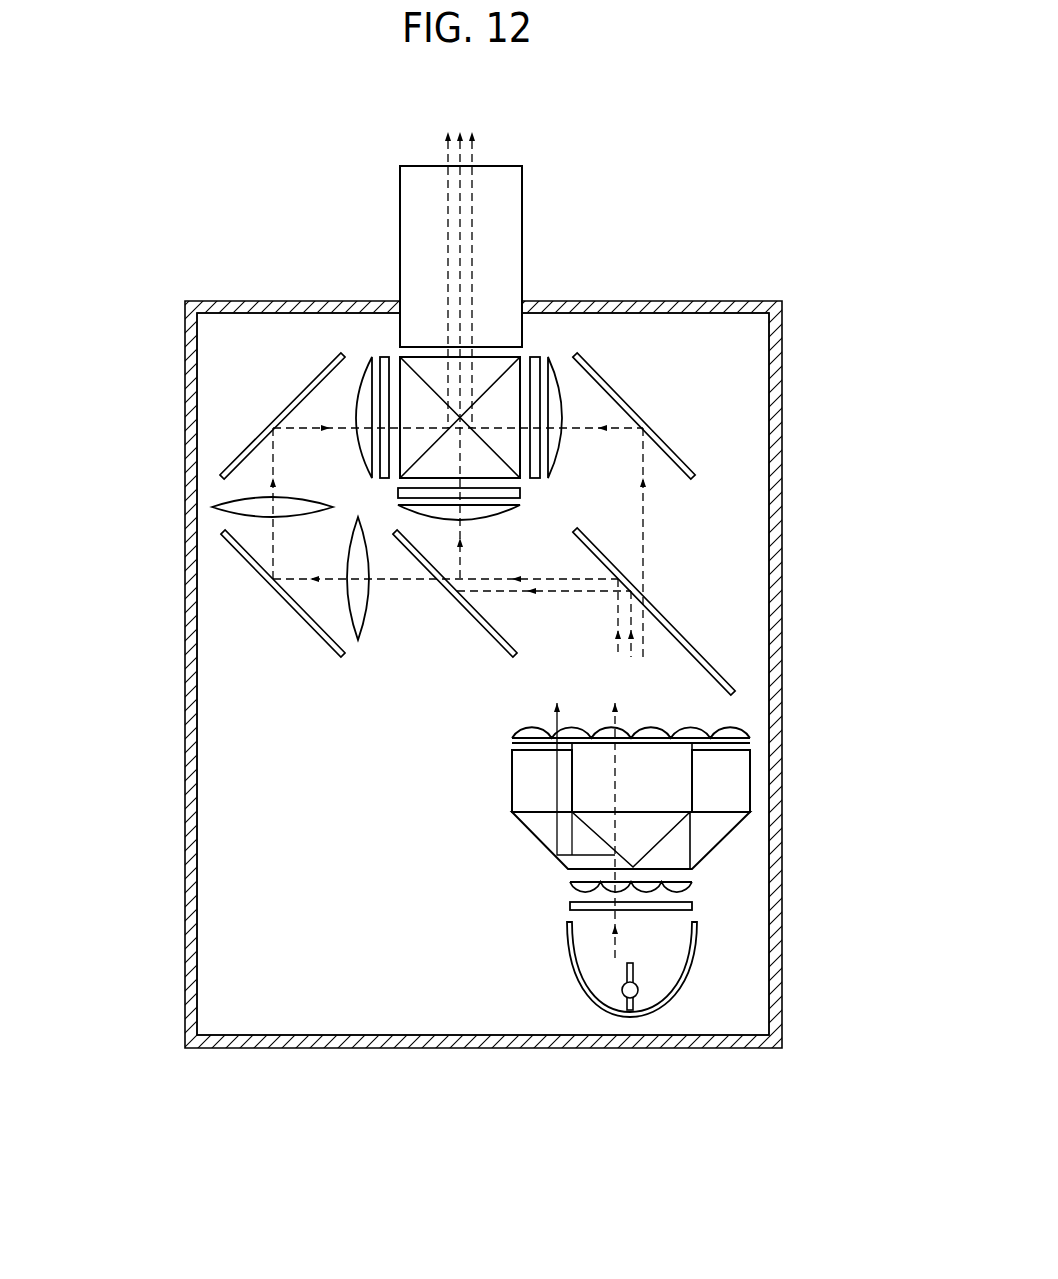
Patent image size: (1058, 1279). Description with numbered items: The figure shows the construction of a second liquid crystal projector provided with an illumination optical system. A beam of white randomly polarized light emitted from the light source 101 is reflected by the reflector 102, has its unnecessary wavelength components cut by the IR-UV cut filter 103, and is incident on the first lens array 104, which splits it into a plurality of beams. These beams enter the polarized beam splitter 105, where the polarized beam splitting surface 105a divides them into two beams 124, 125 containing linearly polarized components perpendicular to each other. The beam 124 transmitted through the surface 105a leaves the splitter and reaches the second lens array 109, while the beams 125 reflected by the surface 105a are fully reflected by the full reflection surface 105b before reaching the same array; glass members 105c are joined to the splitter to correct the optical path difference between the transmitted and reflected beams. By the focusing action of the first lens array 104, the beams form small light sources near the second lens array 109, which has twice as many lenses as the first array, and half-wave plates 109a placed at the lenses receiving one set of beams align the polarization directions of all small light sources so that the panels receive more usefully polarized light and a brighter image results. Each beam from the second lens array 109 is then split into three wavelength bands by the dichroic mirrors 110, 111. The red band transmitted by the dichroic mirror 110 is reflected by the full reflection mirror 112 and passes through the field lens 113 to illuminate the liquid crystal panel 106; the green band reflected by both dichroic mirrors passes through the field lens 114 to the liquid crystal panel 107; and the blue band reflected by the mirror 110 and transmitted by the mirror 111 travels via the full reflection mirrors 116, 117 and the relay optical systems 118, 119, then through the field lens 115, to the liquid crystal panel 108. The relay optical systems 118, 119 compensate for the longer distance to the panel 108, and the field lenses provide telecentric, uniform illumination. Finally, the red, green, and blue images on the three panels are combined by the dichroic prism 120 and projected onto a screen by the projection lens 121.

The light source 101 is at (640, 988).
The reflector 102 is at (690, 1008).
The IR-UV cut filter 103 is at (692, 908).
The first lens array 104 is at (701, 889).
The polarized beam splitter 105 is at (716, 831).
The polarized beam splitting surface 105a is at (717, 849).
The full reflection surface 105b is at (538, 842).
The glass member 105c is at (738, 792).
The liquid crystal panel 106 is at (535, 355).
The liquid crystal panel 107 is at (520, 498).
The liquid crystal panel 108 is at (385, 358).
The second lens array 109 is at (740, 730).
The half-wave plate 109a is at (749, 743).
The dichroic mirror 110 is at (688, 640).
The dichroic mirror 111 is at (492, 633).
The full reflection mirror 112 is at (692, 468).
The field lens 113 is at (560, 355).
The field lens 114 is at (520, 515).
The field lens 115 is at (370, 360).
The full reflection mirror 116 is at (242, 555).
The full reflection mirror 117 is at (242, 453).
The relay optical system 118 is at (355, 650).
The relay optical system 119 is at (212, 507).
The dichroic prism 120 is at (488, 365).
The projection lens 121 is at (508, 182).
The beam 124 is at (617, 773).
The beam 125 is at (570, 783).